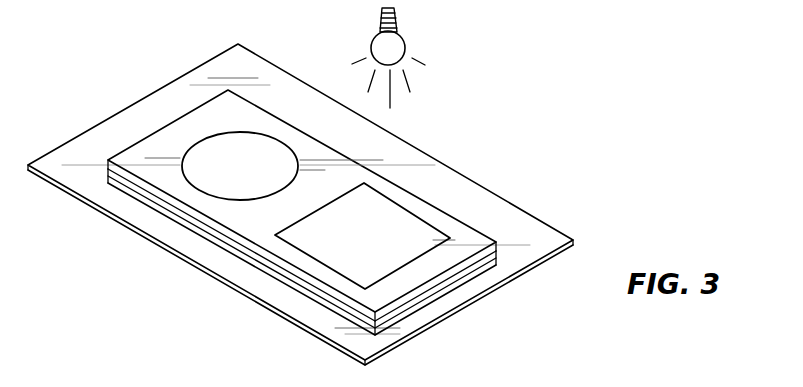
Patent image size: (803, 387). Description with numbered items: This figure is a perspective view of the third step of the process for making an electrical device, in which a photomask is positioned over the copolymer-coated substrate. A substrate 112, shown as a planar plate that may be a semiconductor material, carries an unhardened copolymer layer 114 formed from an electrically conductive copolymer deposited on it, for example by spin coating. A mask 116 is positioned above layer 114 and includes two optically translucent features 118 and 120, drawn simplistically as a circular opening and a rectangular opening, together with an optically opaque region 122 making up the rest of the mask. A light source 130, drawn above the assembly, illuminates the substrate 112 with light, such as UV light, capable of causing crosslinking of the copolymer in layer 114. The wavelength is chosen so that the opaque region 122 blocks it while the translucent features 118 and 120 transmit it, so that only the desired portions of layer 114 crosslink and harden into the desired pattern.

The substrate 112 is at (457, 283).
The unhardened copolymer layer 114 is at (420, 198).
The mask 116 is at (520, 217).
The optically translucent feature 118 is at (258, 133).
The optically translucent feature 120 is at (373, 197).
The optically opaque region 122 is at (204, 113).
The light source 130 is at (392, 43).